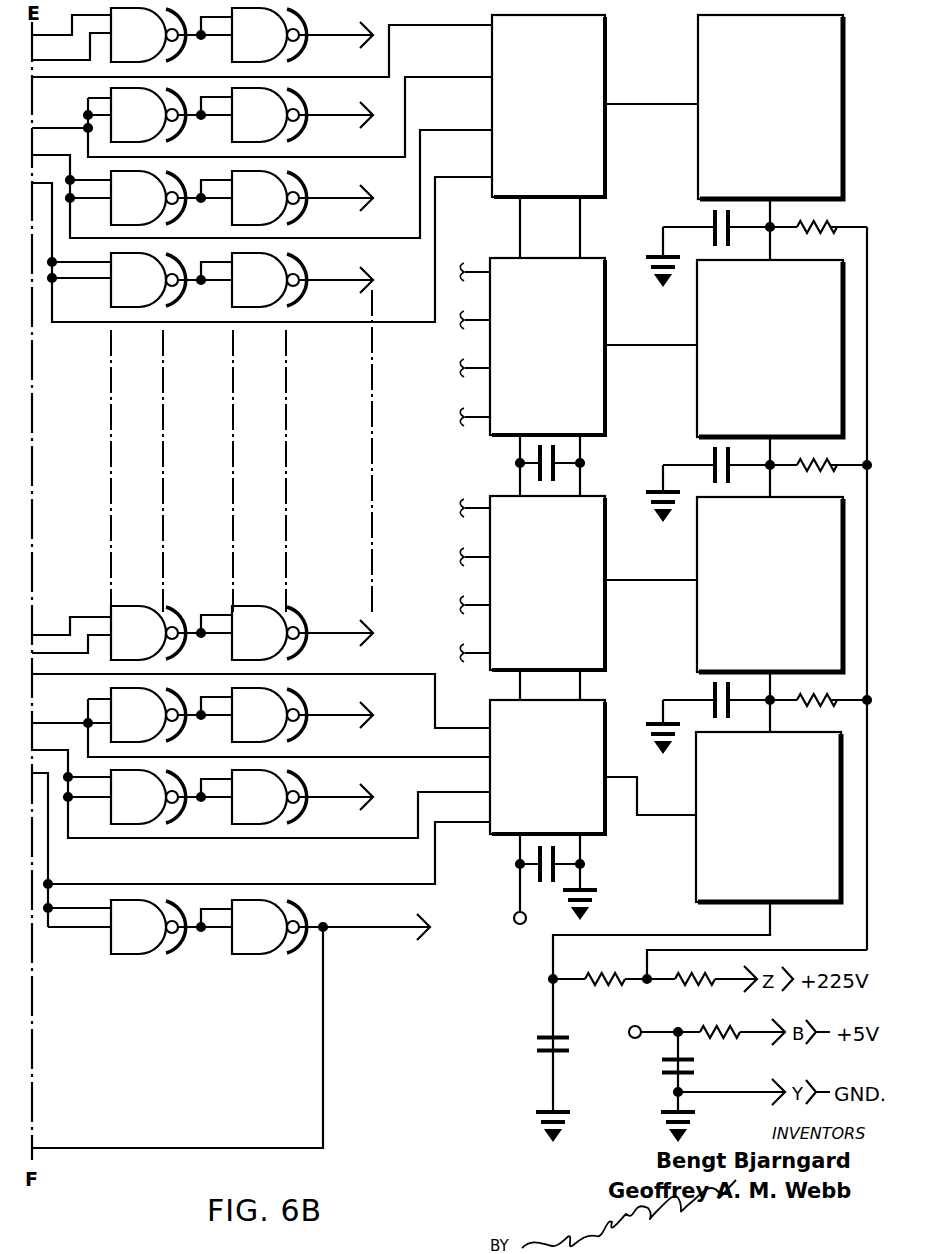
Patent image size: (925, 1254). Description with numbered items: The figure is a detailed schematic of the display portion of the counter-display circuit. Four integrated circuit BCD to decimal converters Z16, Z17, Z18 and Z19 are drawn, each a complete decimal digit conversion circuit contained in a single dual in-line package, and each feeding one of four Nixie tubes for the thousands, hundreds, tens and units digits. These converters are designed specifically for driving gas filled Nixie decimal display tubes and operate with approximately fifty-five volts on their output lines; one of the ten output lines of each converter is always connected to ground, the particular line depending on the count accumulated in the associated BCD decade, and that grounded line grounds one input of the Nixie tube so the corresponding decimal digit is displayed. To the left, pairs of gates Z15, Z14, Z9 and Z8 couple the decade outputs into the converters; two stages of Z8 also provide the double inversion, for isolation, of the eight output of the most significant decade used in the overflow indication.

The BCD to decimal converter Z19 is at (548, 106).
The BCD to decimal converter Z18 is at (532, 346).
The BCD to decimal converter Z17 is at (532, 583).
The BCD to decimal converter Z16 is at (547, 767).
The NAND gates Z15 is at (242, 157).
The NAND gates Z14 is at (242, 156).
The NAND gates Z9 is at (270, 780).
The inverter stages Z8 is at (242, 756).